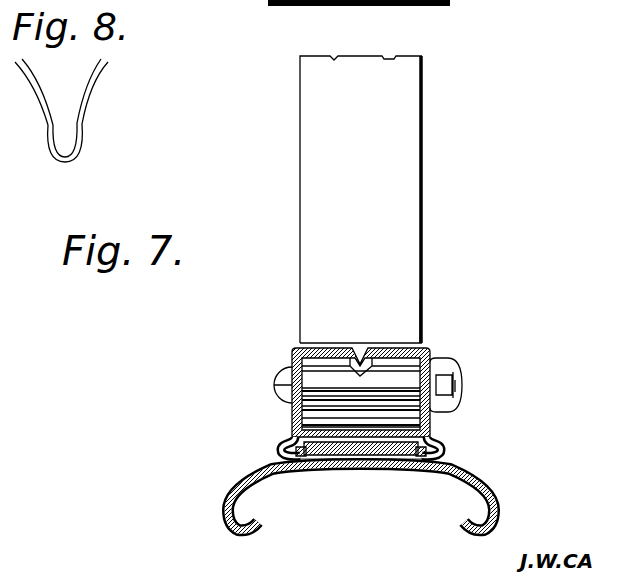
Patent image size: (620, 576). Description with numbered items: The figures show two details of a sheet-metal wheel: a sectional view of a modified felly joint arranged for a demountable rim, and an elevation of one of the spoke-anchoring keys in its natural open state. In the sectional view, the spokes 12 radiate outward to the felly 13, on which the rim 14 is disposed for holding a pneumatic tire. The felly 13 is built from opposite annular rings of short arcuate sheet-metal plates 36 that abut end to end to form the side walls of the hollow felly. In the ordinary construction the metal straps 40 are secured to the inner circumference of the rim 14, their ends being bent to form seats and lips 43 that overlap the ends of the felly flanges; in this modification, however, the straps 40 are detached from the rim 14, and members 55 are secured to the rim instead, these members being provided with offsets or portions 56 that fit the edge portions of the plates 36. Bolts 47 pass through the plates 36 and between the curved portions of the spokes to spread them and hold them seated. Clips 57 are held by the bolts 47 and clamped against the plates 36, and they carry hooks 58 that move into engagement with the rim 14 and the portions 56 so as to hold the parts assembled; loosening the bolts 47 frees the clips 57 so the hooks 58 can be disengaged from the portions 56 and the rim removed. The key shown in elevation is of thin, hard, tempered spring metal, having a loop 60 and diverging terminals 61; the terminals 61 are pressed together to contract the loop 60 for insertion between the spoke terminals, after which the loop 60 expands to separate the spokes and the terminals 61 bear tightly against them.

In FIG. 7, the spokes 12 is at (405, 157).
In FIG. 7, the felly 13 is at (431, 343).
In FIG. 7, the rim 14 is at (497, 470).
In FIG. 7, the arcuate sections or plates 36 is at (282, 383).
In FIG. 7, the metal straps 40 is at (348, 467).
In FIG. 7, the lips 43 is at (324, 342).
In FIG. 7, the bolts 47 is at (463, 387).
In FIG. 7, the members 55 is at (372, 477).
In FIG. 7, the offsets or portions 56 is at (295, 473).
In FIG. 7, the clips 57 is at (284, 358).
In FIG. 7, the hooks 58 is at (276, 438).
In FIG. 8, the loop 60 is at (86, 150).
In FIG. 8, the diverging terminals 61 is at (107, 64).